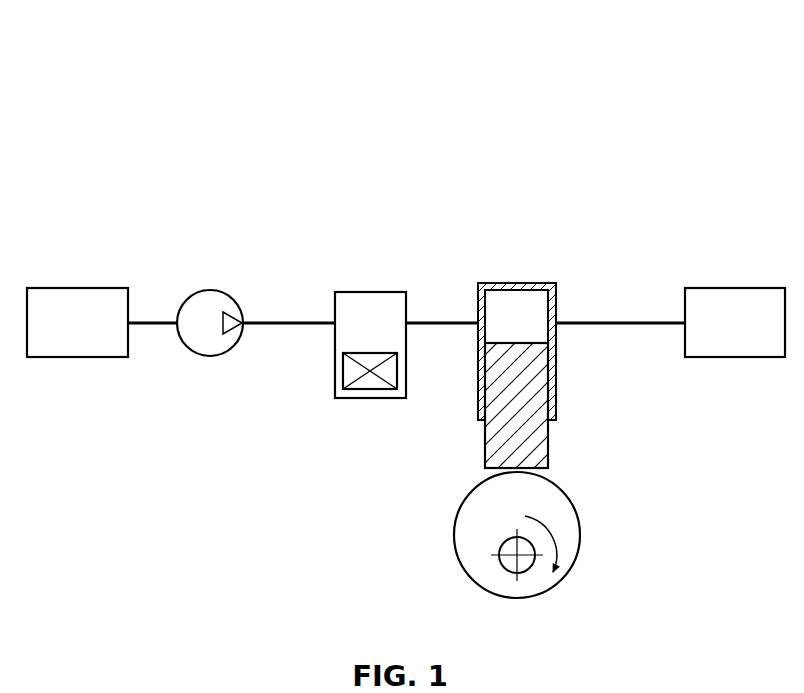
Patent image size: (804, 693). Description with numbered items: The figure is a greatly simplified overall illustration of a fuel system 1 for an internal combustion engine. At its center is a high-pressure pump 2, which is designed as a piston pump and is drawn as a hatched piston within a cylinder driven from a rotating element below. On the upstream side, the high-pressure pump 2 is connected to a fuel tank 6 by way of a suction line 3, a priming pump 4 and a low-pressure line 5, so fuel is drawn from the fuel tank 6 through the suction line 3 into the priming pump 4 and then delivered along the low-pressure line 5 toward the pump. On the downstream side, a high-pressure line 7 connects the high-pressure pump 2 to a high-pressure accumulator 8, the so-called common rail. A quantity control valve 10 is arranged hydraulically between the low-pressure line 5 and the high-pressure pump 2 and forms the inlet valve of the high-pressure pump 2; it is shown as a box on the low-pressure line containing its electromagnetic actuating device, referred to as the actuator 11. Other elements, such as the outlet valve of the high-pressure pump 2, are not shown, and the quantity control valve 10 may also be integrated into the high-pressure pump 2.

The fuel system 1 is at (153, 128).
The high-pressure pump 2 is at (517, 238).
The suction line 3 is at (152, 320).
The priming pump 4 is at (210, 306).
The low-pressure line 5 is at (295, 320).
The fuel tank 6 is at (76, 306).
The high-pressure line 7 is at (620, 321).
The high-pressure accumulator 8 is at (734, 306).
The quantity control valve 10 is at (370, 330).
The actuator 11 is at (372, 386).